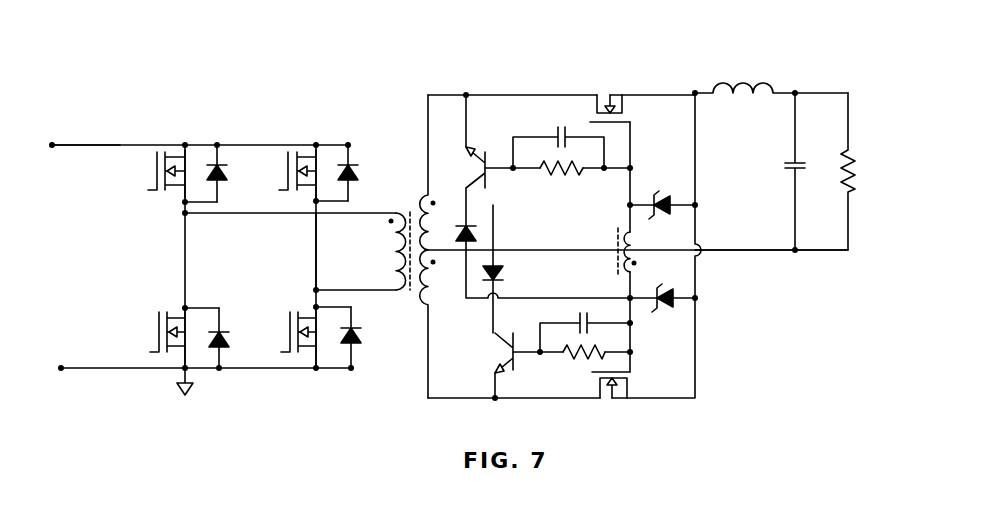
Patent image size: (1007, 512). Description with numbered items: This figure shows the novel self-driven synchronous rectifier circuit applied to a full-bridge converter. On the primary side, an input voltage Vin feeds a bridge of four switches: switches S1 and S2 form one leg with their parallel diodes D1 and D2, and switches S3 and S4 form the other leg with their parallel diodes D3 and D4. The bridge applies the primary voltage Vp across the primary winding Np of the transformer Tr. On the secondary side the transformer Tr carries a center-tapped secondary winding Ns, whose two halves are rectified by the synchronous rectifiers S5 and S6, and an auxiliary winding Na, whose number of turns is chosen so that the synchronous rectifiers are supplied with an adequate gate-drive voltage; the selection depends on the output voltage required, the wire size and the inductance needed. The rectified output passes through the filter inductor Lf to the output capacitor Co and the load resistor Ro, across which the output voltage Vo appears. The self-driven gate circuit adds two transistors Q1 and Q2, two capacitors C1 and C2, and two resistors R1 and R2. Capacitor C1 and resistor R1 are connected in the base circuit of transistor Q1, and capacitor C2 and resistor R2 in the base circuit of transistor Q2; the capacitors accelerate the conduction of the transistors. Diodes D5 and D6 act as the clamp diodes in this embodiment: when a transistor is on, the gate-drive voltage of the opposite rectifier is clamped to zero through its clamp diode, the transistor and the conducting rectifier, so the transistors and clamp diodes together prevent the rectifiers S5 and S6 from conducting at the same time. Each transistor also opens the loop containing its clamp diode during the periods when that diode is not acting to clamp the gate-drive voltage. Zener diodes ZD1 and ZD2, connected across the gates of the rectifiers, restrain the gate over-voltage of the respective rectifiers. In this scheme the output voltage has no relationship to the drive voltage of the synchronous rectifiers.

The input voltage Vin is at (86, 162).
The first switching element S1 is at (153, 174).
The diode D1 is at (228, 173).
The synchronous rectifier S3 is at (289, 174).
The third diode D3 is at (360, 173).
The second switching element S2 is at (153, 338).
The diode D2 is at (230, 338).
The synchronous rectifier S4 is at (289, 338).
The fourth diode D4 is at (362, 337).
The primary voltage Vp is at (302, 254).
The transformer Tr is at (401, 228).
The primary winding Np is at (385, 251).
The secondary winding Ns is at (437, 246).
The transistor Q1 is at (460, 160).
The fifth diode D5 is at (474, 224).
The sixth diode D6 is at (509, 279).
The transistor Q2 is at (485, 365).
The capacitor C1 is at (558, 139).
The resistor R1 is at (561, 181).
The capacitor C2 is at (585, 326).
The resistor R2 is at (584, 367).
The fifth switching element S5 is at (610, 92).
The sixth switching element S6 is at (611, 403).
The zener diode ZD1 is at (662, 187).
The zener diode ZD2 is at (662, 285).
The auxiliary winding turns Na is at (608, 251).
The filter inductor Lf is at (771, 75).
The output capacitor Co is at (781, 171).
The load resistor Ro is at (775, 171).
The output voltage Vo is at (876, 171).